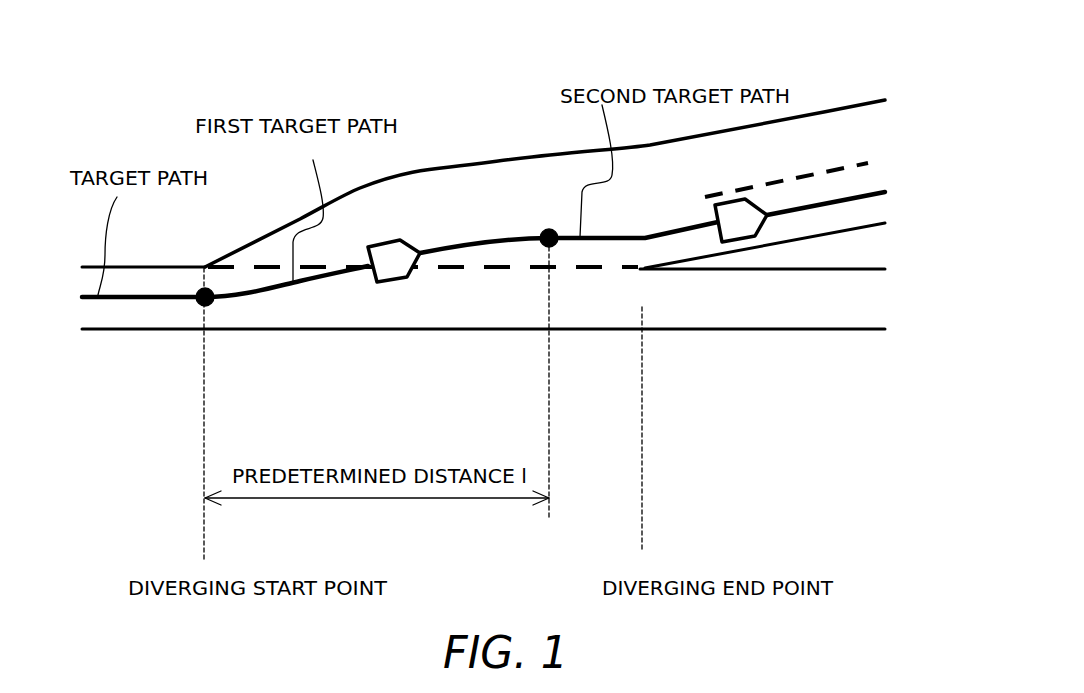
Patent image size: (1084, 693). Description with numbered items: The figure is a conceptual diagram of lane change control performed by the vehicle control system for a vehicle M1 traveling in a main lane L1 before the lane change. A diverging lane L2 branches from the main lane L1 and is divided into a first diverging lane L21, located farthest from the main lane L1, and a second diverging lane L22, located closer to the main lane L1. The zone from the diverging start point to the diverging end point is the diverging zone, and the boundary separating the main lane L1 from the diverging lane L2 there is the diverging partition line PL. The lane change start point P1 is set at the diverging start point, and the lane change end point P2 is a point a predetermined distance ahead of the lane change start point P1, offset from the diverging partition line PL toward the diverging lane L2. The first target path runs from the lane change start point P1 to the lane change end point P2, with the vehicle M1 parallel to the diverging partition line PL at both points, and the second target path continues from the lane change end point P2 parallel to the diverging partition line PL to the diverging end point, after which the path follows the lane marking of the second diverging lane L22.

The main lane L1 is at (108, 337).
The diverging lane L2 is at (532, 145).
The first diverging lane L21 is at (850, 133).
The second diverging lane L22 is at (863, 213).
The vehicle M1 is at (390, 250).
The lane change start point P1 is at (209, 303).
The lane change end point P2 is at (552, 246).
The diverging partition line PL is at (436, 270).